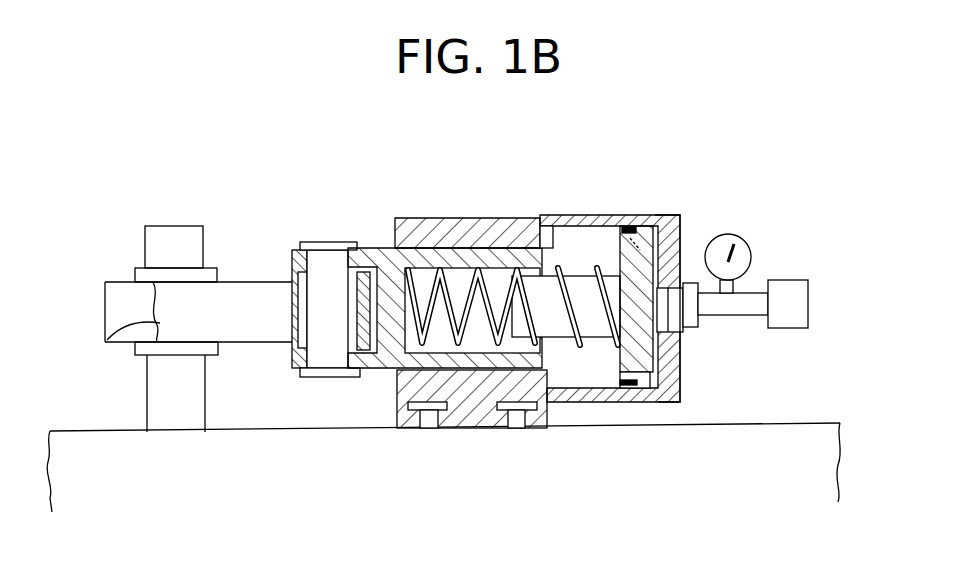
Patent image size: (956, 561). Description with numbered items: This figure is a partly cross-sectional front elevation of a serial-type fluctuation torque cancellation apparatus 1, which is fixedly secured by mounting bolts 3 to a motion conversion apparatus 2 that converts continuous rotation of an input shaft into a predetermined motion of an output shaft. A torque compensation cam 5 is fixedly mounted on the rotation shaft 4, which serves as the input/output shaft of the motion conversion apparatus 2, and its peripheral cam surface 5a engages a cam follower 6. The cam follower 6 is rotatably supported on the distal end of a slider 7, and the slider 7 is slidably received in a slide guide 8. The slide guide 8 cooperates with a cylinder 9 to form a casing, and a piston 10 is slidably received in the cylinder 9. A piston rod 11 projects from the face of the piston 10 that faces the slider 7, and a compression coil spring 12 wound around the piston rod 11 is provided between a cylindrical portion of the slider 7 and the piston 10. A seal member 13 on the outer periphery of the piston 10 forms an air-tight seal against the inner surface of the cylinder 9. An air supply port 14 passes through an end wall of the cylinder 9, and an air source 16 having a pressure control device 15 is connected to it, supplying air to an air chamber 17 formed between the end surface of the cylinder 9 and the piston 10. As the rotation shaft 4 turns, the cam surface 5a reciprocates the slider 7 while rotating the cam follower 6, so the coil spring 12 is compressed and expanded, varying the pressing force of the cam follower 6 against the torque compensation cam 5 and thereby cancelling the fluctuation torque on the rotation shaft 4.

The fluctuation torque cancellation apparatus 1 is at (715, 152).
The motion conversion apparatus 2 is at (630, 532).
The mounting bolts 3 is at (437, 428).
The rotation shaft 4 is at (153, 237).
The torque compensation cam 5 is at (117, 302).
The cam surface 5a is at (107, 340).
The cam follower 6 is at (293, 277).
The slider 7 is at (372, 262).
The slide guide 8 is at (492, 233).
The cylinder 9 is at (583, 217).
The piston 10 is at (640, 255).
The piston rod 11 is at (583, 292).
The compression coil spring 12 is at (603, 290).
The seal member 13 is at (628, 372).
The air supply port 14 is at (683, 273).
The pressure control device 15 is at (750, 245).
The air source 16 is at (798, 283).
The air chamber 17 is at (663, 323).